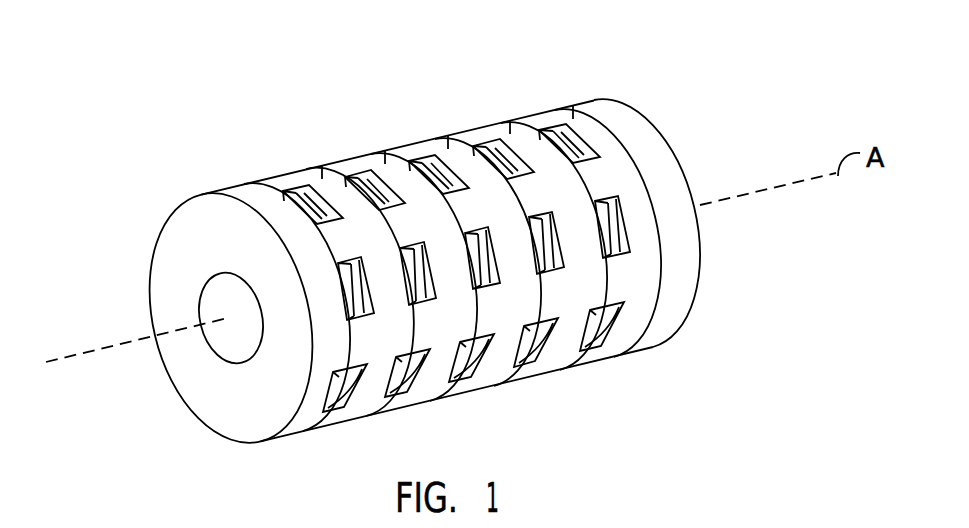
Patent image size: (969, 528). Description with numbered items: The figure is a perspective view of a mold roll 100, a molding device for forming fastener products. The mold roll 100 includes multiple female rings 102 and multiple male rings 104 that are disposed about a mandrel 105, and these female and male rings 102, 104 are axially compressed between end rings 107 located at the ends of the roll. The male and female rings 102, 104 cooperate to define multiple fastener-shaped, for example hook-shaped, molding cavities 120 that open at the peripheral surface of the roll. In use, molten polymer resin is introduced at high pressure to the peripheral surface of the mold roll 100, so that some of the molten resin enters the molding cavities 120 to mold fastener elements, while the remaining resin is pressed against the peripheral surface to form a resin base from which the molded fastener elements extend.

The mold roll 100 is at (160, 32).
The female ring 102 is at (519, 127).
The male ring 104 is at (572, 112).
The mandrel 105 is at (219, 337).
The end ring 107 is at (168, 265).
The molding cavity 120 is at (615, 305).